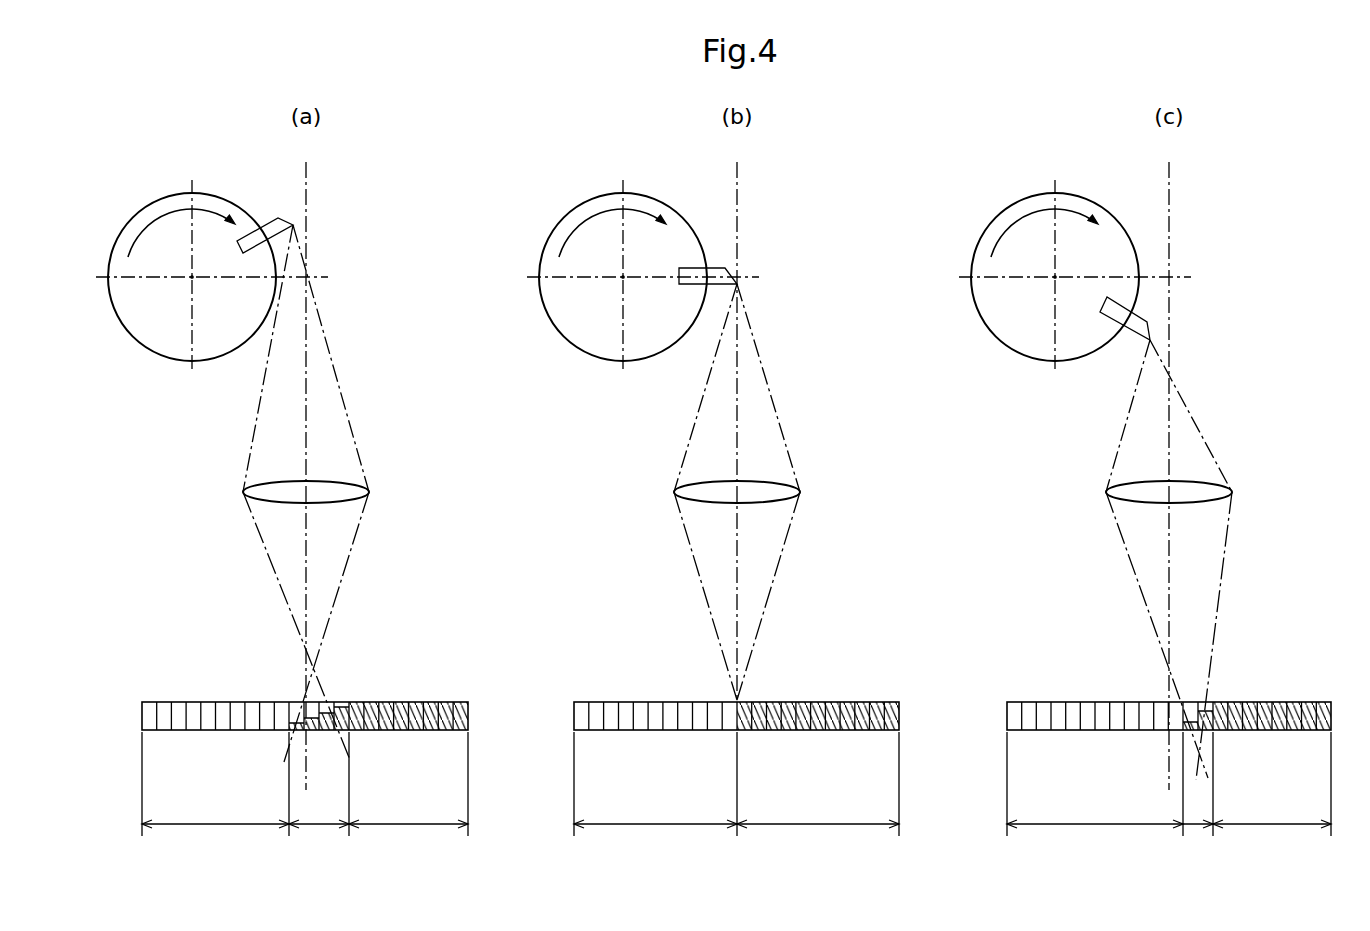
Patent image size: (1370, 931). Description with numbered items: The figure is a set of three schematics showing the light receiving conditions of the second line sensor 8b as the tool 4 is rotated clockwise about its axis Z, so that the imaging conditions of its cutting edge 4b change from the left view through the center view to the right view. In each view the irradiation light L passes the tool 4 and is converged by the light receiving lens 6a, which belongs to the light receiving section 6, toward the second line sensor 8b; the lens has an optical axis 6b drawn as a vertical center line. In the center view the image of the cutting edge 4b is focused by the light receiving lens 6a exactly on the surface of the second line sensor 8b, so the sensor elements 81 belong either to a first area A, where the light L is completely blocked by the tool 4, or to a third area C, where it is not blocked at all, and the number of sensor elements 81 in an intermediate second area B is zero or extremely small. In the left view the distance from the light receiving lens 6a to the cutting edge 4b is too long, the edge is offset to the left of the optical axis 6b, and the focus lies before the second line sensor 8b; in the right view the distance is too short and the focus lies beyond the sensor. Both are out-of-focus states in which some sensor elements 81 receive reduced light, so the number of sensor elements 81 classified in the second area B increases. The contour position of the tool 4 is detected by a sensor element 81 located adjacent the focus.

The tool 4 is at (152, 206).
The cutting edge 4b is at (294, 224).
The rotation axis of polygon mirror Z is at (192, 277).
The light receiving section 6 is at (373, 398).
The light receiving lens 6a is at (275, 503).
The optical axis 6b is at (307, 188).
The irradiation light L is at (338, 594).
The second line sensor 8b is at (235, 690).
The sensor elements 81 is at (445, 702).